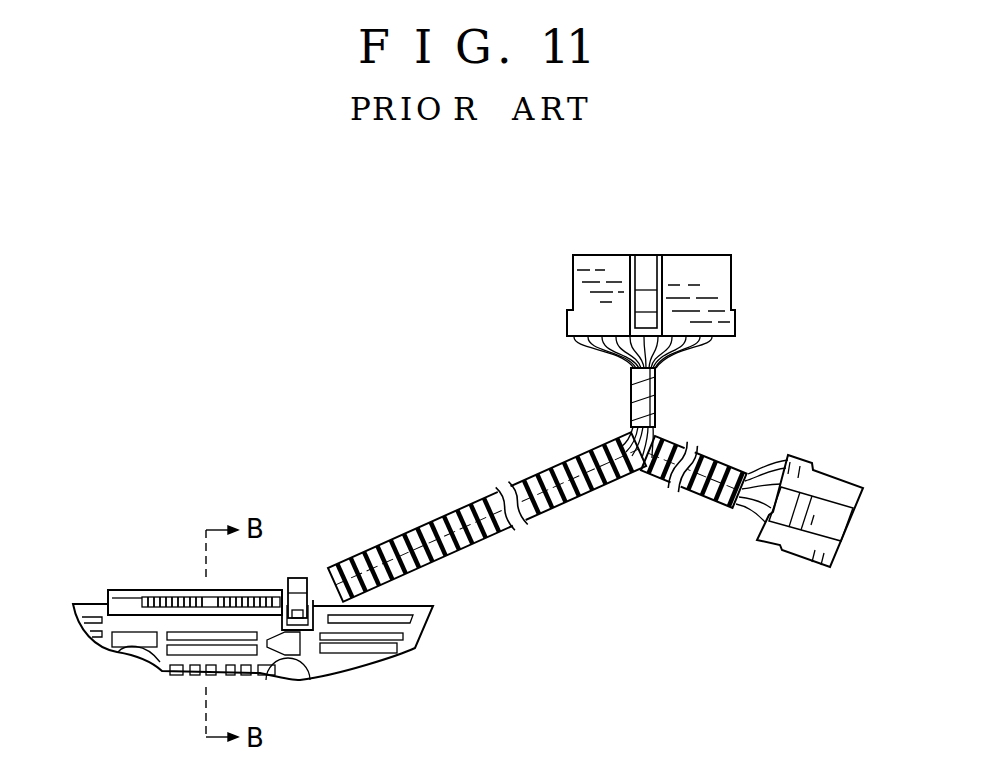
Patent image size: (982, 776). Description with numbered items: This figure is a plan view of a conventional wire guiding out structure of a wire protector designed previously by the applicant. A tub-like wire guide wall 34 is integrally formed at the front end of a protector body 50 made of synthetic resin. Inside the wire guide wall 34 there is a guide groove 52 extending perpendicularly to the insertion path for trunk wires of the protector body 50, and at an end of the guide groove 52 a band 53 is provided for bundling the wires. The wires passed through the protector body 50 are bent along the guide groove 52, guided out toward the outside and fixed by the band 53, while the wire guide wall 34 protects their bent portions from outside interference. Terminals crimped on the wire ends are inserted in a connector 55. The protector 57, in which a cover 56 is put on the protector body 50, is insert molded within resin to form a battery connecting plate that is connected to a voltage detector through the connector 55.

The wire guide wall 34 is at (258, 588).
The protector body 50 is at (92, 603).
The guide groove 52 is at (128, 598).
The band 53 is at (302, 580).
The connector 55 is at (717, 283).
The cover 56 is at (160, 662).
The protector 57 is at (421, 591).